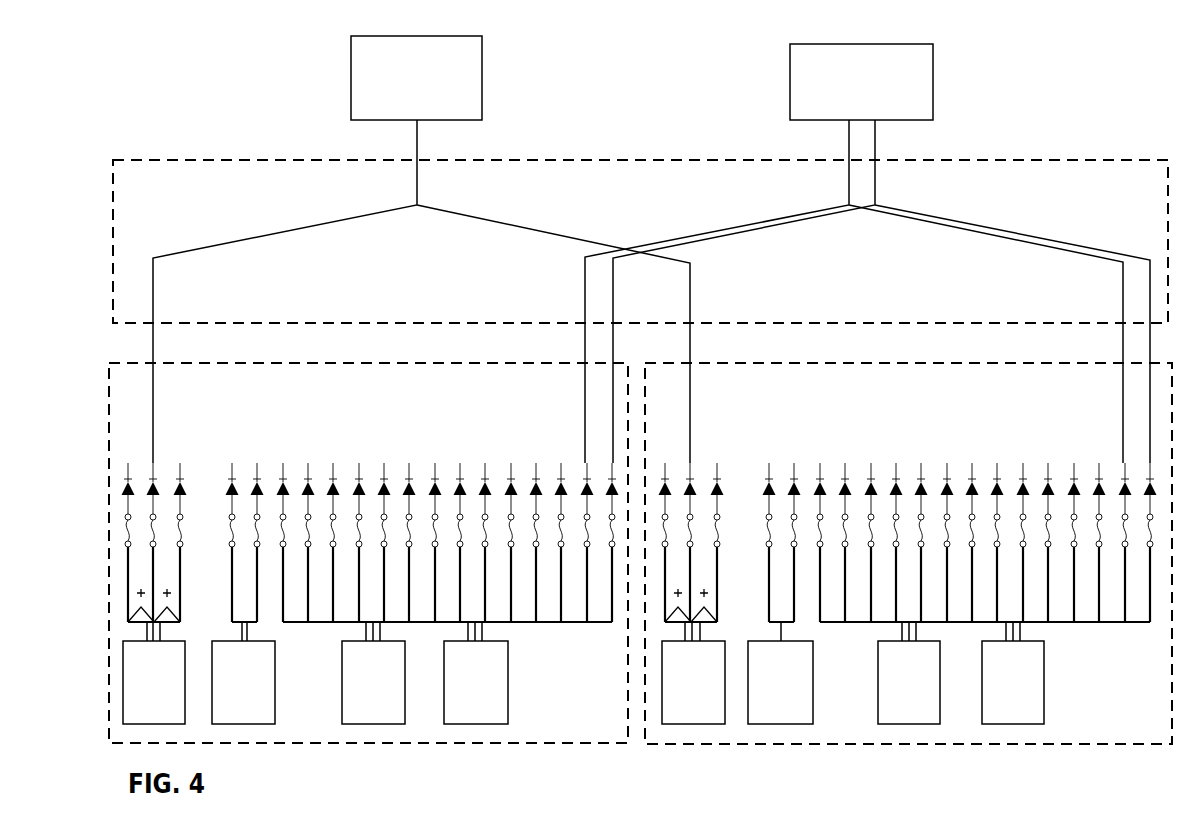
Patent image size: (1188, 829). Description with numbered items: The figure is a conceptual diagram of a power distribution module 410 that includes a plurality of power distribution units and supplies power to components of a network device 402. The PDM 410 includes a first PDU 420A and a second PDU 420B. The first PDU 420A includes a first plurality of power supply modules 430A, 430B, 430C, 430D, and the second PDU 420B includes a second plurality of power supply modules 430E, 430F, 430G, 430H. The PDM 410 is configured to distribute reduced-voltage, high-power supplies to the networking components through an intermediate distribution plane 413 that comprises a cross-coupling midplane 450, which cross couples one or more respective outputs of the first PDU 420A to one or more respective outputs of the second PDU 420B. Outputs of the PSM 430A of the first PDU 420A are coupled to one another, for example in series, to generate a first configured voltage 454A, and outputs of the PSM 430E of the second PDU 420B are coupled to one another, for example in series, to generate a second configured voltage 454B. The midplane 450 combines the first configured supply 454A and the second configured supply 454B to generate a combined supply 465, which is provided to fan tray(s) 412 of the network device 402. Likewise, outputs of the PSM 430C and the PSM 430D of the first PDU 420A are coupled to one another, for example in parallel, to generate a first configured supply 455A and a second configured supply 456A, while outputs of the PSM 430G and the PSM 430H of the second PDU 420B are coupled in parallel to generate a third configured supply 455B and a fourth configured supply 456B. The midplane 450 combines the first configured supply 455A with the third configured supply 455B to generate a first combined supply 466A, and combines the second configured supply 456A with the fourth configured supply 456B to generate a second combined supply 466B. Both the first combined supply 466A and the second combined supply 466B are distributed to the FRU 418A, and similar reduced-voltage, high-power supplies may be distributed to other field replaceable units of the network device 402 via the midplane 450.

The network device 402 is at (153, 114).
The fan tray(s) 412 is at (401, 107).
The FRU 418A is at (839, 99).
The intermediate distribution plane 413 is at (1003, 138).
The cross-coupling midplane 450 is at (618, 217).
The combined supply 465 is at (428, 195).
The first combined supply 466A is at (795, 196).
The second combined supply 466B is at (883, 196).
The power distribution module 410 is at (861, 760).
The first PDU 420A is at (554, 719).
The second PDU 420B is at (1095, 719).
The first configured voltage 454A is at (157, 401).
The second configured voltage 454B is at (704, 401).
The first configured supply 455A is at (585, 446).
The third configured supply 455B is at (1123, 442).
The second configured supply 456A is at (613, 389).
The fourth configured supply 456B is at (1150, 410).
The power supply module 430A is at (131, 703).
The power supply module 430B is at (220, 703).
The power supply module 430C is at (350, 703).
The power supply module 430D is at (453, 703).
The power supply module 430E is at (716, 703).
The power supply module 430F is at (759, 703).
The power supply module 430G is at (886, 703).
The power supply module 430H is at (990, 703).